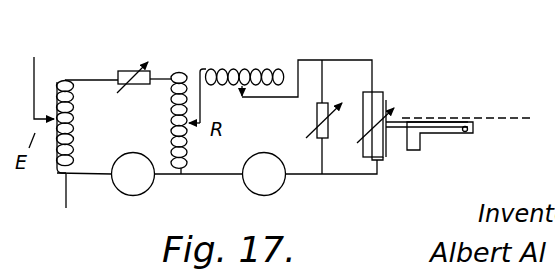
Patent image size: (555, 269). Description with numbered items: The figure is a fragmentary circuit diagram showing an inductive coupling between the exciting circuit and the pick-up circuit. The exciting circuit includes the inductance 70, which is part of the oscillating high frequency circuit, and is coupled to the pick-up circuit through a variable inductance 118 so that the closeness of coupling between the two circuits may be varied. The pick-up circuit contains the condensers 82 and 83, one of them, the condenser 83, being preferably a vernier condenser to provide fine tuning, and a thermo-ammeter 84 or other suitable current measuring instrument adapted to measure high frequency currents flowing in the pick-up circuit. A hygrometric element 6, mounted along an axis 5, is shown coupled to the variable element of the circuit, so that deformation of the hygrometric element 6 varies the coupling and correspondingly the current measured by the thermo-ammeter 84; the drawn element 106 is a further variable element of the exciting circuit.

The inductance 70 is at (69, 78).
The variable resistor 106 is at (133, 62).
The variable inductance 118 is at (170, 119).
The thermo-ammeter 84 is at (111, 181).
The vernier condenser 83 is at (317, 114).
The condenser 82 is at (378, 92).
The axis / shaft line 5 is at (512, 116).
The hygrometric element 6 is at (447, 134).